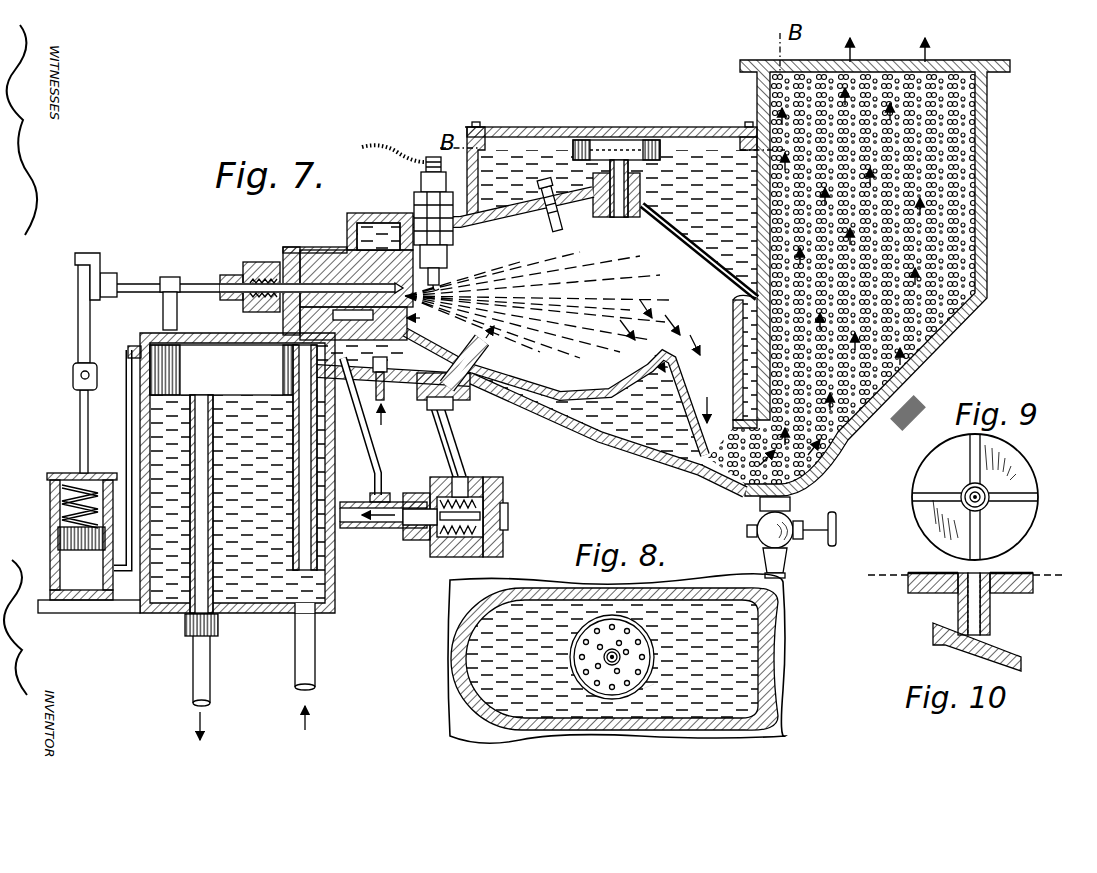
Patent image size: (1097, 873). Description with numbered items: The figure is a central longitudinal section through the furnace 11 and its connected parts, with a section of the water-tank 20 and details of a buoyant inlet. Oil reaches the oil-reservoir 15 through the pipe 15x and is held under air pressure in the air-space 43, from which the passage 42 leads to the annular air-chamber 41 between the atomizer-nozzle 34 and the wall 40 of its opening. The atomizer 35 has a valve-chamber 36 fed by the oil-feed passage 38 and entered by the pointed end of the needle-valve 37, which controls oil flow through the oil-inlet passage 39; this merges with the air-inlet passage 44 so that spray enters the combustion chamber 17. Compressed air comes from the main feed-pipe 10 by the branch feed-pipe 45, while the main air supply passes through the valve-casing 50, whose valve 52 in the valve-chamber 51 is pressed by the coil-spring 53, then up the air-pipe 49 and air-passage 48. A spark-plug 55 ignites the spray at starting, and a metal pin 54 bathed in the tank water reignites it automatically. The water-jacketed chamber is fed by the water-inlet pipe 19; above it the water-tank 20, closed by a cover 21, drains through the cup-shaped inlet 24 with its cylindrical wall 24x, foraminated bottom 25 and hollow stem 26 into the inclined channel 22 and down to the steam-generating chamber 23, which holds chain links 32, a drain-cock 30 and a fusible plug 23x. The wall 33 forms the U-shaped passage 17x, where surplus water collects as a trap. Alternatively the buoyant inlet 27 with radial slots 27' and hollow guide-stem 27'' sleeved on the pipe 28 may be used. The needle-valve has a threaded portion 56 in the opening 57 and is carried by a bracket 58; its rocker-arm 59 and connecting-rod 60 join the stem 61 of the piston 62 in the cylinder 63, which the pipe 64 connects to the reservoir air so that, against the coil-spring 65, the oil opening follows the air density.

In FIG. 7, the main compressed-air feed-pipe 10 is at (382, 530).
In FIG. 7, the furnace 11 is at (566, 427).
In FIG. 8, the furnace 11 is at (535, 728).
In FIG. 7, the oil-reservoir 15 is at (335, 603).
In FIG. 7, the oil pipe 15x is at (316, 675).
In FIG. 7, the combustion chamber 17 is at (558, 333).
In FIG. 10, the combustion chamber 17 is at (957, 657).
In FIG. 7, the passage 17x is at (700, 455).
In FIG. 7, the water-inlet pipe 19 is at (390, 395).
In FIG. 7, the water-tank 20 is at (503, 163).
In FIG. 8, the water-tank 20 is at (532, 612).
In FIG. 7, the cover 21 is at (657, 128).
In FIG. 7, the inclined channel 22 is at (710, 260).
In FIG. 10, the inclined channel 22 is at (1012, 660).
In FIG. 7, the steam-generating chamber 23 is at (962, 241).
In FIG. 7, the fusible plug 23x is at (922, 405).
In FIG. 7, the cup-shaped inlet 24 is at (602, 143).
In FIG. 8, the cup-shaped inlet 24 is at (563, 673).
In FIG. 7, the cylindrical wall of the cup 24x is at (667, 143).
In FIG. 8, the cylindrical wall of the cup 24x is at (641, 692).
In FIG. 7, the foraminated bottom 25 is at (635, 150).
In FIG. 8, the foraminated bottom 25 is at (610, 690).
In FIG. 7, the hollow stem 26 is at (613, 192).
In FIG. 8, the hollow stem 26 is at (610, 660).
In FIG. 9, the buoyant inlet 27 is at (957, 497).
In FIG. 10, the buoyant inlet 27 is at (947, 598).
In FIG. 9, the radial slots 27' is at (971, 497).
In FIG. 10, the radial slots 27' is at (961, 557).
In FIG. 10, the hollow guide-stem 27'' is at (1018, 604).
In FIG. 9, the pipe 28 is at (975, 497).
In FIG. 10, the pipe 28 is at (985, 614).
In FIG. 7, the drain-cock 30 is at (755, 527).
In FIG. 7, the chain links 32 is at (962, 326).
In FIG. 7, the wall 33 is at (733, 356).
In FIG. 7, the atomizer-nozzle 34 is at (426, 319).
In FIG. 7, the atomizer 35 is at (311, 257).
In FIG. 7, the valve-chamber 36 is at (292, 249).
In FIG. 7, the needle-valve 37 is at (200, 294).
In FIG. 7, the oil-feed passage 38 is at (292, 322).
In FIG. 7, the oil-inlet passage 39 is at (407, 217).
In FIG. 7, the wall of the opening 40 is at (363, 233).
In FIG. 7, the annular air-chamber 41 is at (348, 214).
In FIG. 7, the passage 42 is at (297, 338).
In FIG. 7, the air-space 43 is at (223, 370).
In FIG. 7, the air-inlet passage 44 is at (540, 309).
In FIG. 7, the branch feed-pipe 45 is at (378, 454).
In FIG. 7, the air-passage 48 is at (485, 352).
In FIG. 7, the air-pipe 49 is at (458, 442).
In FIG. 7, the valve-casing 50 is at (440, 537).
In FIG. 7, the valve-chamber 51 is at (456, 538).
In FIG. 7, the valve 52 is at (424, 538).
In FIG. 7, the coil-spring 53 is at (503, 499).
In FIG. 7, the metal pin 54 is at (555, 212).
In FIG. 7, the spark-plug 55 is at (503, 221).
In FIG. 7, the threaded portion 56 is at (252, 266).
In FIG. 7, the opening 57 is at (268, 281).
In FIG. 7, the bracket 58 is at (171, 279).
In FIG. 7, the rocker-arm 59 is at (101, 259).
In FIG. 7, the connecting-rod 60 is at (91, 320).
In FIG. 7, the stem 61 is at (80, 417).
In FIG. 7, the piston 62 is at (60, 537).
In FIG. 7, the cylinder 63 is at (52, 561).
In FIG. 7, the pipe 64 is at (124, 447).
In FIG. 7, the coil-spring 65 is at (62, 500).